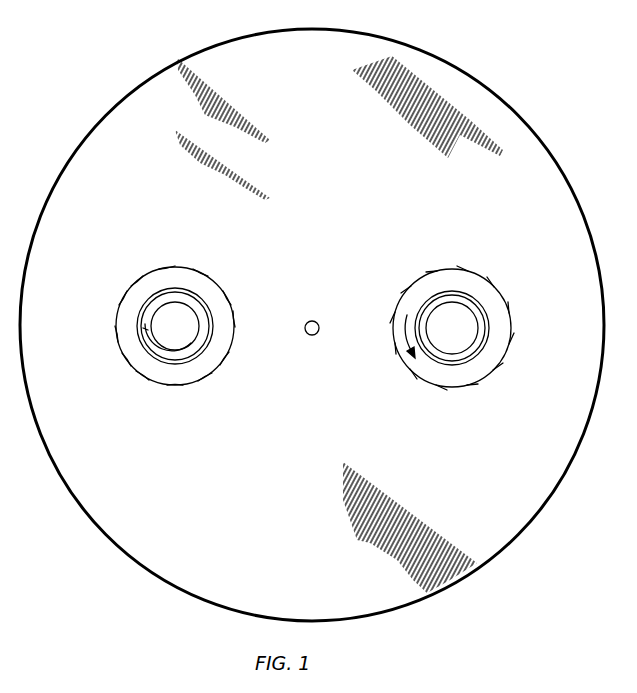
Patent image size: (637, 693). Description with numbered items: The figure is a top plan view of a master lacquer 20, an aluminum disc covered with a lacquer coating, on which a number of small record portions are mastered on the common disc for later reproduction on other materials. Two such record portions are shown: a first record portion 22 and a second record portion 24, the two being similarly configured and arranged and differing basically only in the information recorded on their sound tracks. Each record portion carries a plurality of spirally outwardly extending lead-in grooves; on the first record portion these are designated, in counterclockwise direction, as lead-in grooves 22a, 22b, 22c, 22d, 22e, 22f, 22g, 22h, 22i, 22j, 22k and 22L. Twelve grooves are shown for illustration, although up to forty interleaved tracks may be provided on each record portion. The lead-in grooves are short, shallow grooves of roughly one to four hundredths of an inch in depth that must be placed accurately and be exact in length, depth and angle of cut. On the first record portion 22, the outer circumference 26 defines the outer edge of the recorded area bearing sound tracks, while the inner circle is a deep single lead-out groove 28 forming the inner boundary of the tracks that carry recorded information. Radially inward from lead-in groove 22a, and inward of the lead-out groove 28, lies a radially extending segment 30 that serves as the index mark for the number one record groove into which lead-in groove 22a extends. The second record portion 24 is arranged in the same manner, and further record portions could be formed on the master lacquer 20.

The master lacquer 20 is at (313, 178).
The first record portion 22 is at (212, 292).
The lead-in groove 22a is at (117, 338).
The lead-in groove 22b is at (128, 362).
The lead-in groove 22c is at (146, 378).
The lead-in groove 22d is at (179, 385).
The lead-in groove 22e is at (208, 375).
The lead-in groove 22f is at (227, 355).
The lead-in groove 22g is at (233, 315).
The lead-in groove 22h is at (225, 294).
The lead-in groove 22i is at (197, 271).
The lead-in groove 22j is at (163, 268).
The lead-in groove 22k is at (134, 283).
The lead-in groove 22L is at (121, 301).
The second record portion 24 is at (466, 284).
The outer circumference 26 is at (218, 368).
The lead-out groove 28 is at (190, 356).
The radially extending segment 30 is at (148, 320).